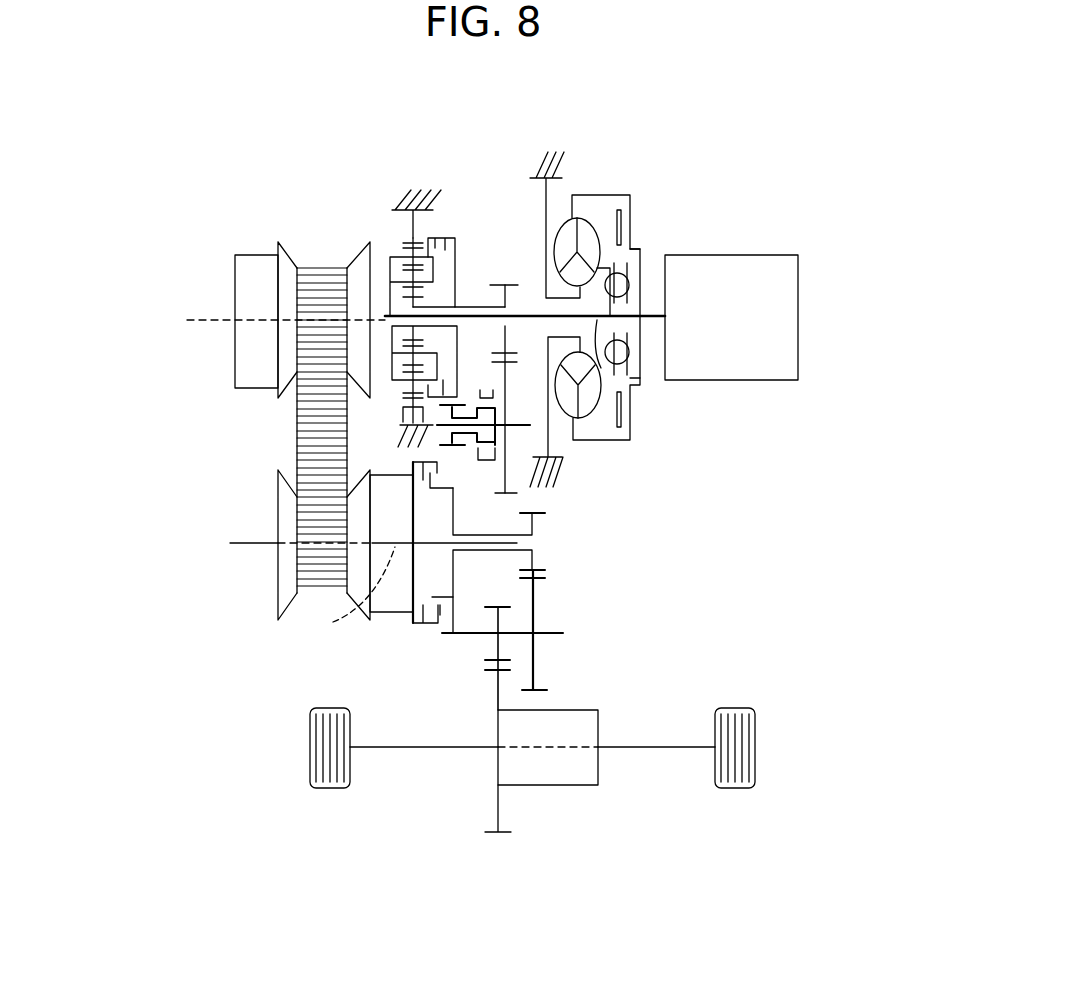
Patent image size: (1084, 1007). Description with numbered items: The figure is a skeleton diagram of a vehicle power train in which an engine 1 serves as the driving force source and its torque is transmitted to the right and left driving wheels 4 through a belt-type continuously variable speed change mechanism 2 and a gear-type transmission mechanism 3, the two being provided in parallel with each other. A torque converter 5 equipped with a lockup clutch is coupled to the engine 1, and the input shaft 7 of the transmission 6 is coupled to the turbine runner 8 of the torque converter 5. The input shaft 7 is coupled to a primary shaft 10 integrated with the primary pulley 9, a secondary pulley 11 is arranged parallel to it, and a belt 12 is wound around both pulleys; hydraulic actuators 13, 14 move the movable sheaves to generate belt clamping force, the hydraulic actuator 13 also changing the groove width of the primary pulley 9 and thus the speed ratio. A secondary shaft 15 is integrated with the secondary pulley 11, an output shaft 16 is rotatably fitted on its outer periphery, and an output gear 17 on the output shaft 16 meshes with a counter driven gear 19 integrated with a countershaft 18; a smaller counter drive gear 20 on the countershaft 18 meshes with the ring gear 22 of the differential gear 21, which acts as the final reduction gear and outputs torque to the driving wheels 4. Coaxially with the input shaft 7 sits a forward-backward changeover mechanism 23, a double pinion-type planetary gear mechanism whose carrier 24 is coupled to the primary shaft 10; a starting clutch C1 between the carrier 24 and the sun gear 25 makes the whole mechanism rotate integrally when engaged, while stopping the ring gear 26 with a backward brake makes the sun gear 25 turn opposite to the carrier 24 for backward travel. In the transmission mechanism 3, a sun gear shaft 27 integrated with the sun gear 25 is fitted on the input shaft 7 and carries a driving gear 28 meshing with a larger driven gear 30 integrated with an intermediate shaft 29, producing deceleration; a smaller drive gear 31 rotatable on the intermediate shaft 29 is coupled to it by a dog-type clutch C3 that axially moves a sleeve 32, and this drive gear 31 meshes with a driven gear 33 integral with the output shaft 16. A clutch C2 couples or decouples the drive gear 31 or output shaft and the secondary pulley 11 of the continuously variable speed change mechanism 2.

The engine 1 is at (736, 255).
The belt-type continuously variable speed change mechanism 2 is at (311, 181).
The transmission mechanism 3 is at (534, 414).
The driving wheels 4 is at (310, 738).
The torque converter 5 is at (581, 146).
The transmission 6 is at (554, 101).
The input shaft 7 is at (603, 366).
The turbine runner 8 is at (581, 221).
The primary pulley 9 is at (286, 256).
The primary shaft 10 is at (366, 312).
The secondary pulley 11 is at (285, 606).
The belt 12 is at (298, 452).
The hydraulic actuator 13 is at (237, 292).
The hydraulic actuator 14 is at (393, 613).
The secondary shaft 15 is at (358, 600).
The output shaft 16 is at (527, 540).
The output gear 17 is at (540, 571).
The countershaft 18 is at (558, 633).
The counter driven gear 19 is at (535, 662).
The counter drive gear 20 is at (505, 606).
The differential gear 21 is at (563, 786).
The ring gear 22 is at (491, 834).
The forward-backward changeover mechanism 23 is at (434, 171).
The carrier 24 is at (390, 266).
The sun gear 25 is at (430, 306).
The ring gear 26 is at (430, 212).
The sun gear shaft 27 is at (478, 307).
The driving gear 28 is at (515, 285).
The intermediate shaft 29 is at (513, 428).
The driven gear 30 is at (552, 393).
The drive gear 31 is at (440, 408).
The sleeve 32 is at (486, 402).
The driven gear 33 is at (458, 636).
The starting clutch C1 is at (402, 248).
The clutch C2 is at (413, 624).
The clutch C3 is at (489, 463).